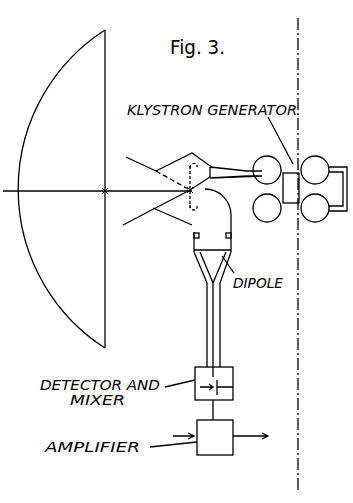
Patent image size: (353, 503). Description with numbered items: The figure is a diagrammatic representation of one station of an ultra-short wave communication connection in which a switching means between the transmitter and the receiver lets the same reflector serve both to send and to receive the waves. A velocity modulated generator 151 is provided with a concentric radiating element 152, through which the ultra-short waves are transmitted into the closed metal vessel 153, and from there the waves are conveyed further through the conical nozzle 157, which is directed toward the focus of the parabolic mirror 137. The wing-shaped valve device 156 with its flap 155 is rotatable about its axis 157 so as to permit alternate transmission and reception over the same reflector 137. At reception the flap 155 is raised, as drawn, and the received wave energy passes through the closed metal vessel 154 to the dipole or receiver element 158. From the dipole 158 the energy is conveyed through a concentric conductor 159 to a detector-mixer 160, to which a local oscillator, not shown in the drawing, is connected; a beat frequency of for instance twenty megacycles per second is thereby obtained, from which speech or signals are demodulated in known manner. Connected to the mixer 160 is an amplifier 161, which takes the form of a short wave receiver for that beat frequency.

The parabolic mirror 137 is at (77, 54).
The velocity modulated generator 151 is at (314, 156).
The concentric radiating element 152 is at (219, 166).
The closed metal vessel 153 is at (192, 156).
The closed metal vessel 154 is at (203, 218).
The flap 155 is at (160, 209).
The wing-shaped valve device 156 is at (209, 188).
The conical nozzle 157 is at (133, 157).
The dipole or receiver element 158 is at (232, 242).
The concentric conductor 159 is at (220, 315).
The detector-mixer 160 is at (235, 377).
The amplifier 161 is at (233, 426).